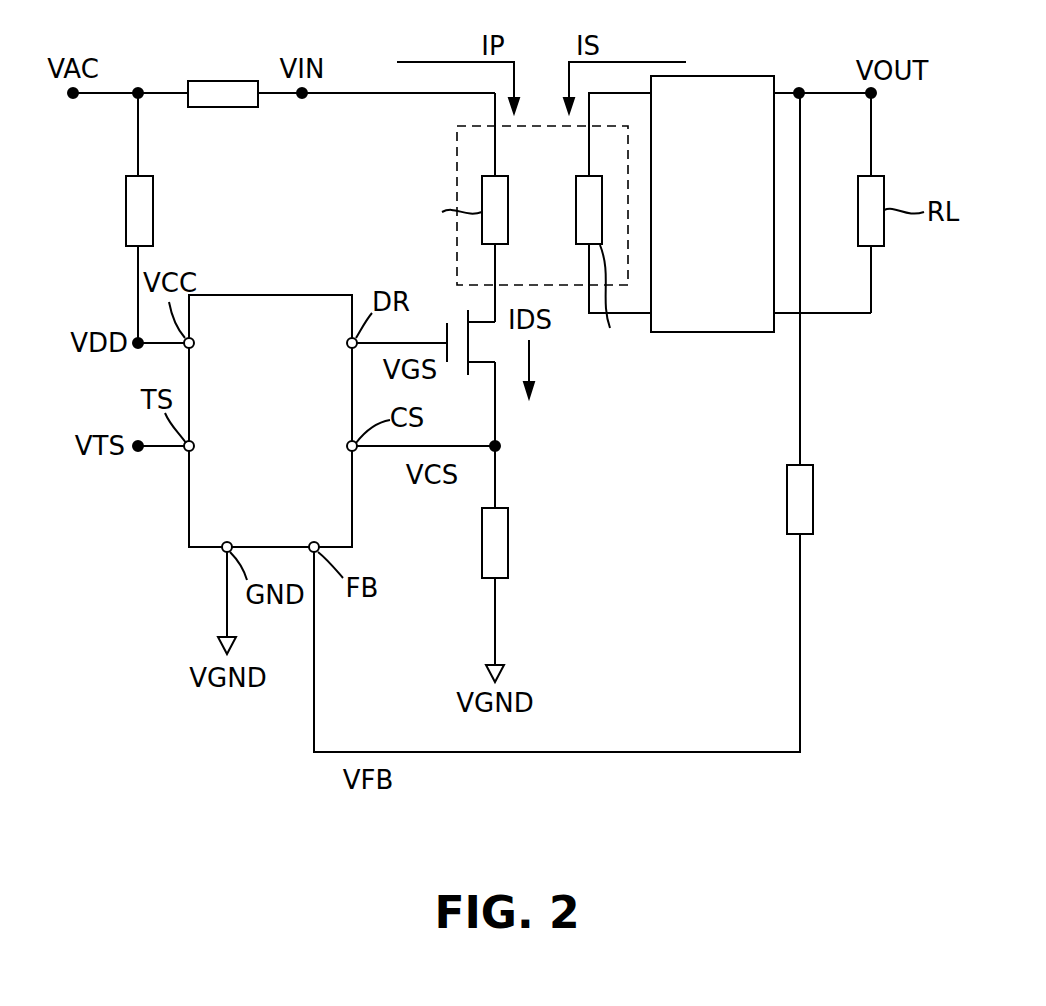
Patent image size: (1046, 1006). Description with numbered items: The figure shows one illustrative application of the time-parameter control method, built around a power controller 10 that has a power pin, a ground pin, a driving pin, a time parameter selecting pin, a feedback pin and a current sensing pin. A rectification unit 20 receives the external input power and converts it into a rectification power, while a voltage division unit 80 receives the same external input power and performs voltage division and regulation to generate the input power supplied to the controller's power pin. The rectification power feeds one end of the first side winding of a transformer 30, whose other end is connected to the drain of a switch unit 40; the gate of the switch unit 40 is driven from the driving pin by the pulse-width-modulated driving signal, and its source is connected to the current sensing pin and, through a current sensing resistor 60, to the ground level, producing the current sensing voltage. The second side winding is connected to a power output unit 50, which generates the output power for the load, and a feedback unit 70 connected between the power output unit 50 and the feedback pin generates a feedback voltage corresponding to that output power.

The power controller 10 is at (270, 295).
The rectification unit 20 is at (220, 81).
The transformer 30 is at (568, 287).
The switch unit 40 is at (453, 327).
The power output unit 50 is at (713, 76).
The current sensing resistor 60 is at (508, 542).
The feedback unit 70 is at (813, 497).
The voltage division unit 80 is at (153, 210).